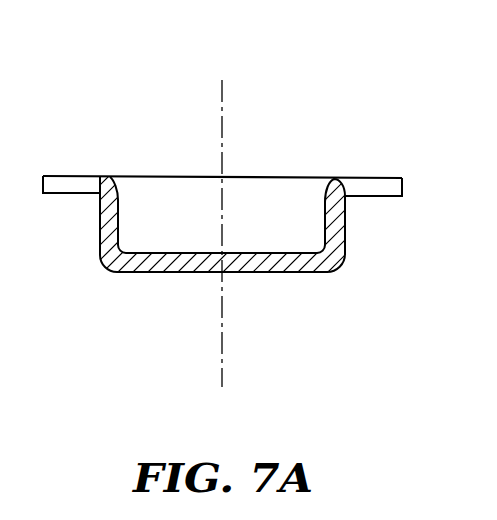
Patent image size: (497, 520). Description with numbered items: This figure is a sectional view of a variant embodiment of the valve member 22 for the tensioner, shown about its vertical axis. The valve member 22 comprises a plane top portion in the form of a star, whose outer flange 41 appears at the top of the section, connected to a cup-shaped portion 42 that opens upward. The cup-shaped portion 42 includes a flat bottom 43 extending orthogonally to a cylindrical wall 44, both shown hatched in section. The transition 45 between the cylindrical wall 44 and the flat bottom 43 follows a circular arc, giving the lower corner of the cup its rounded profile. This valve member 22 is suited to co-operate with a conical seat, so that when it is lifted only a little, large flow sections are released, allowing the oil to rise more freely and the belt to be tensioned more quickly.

The drawn cup 22 is at (283, 128).
The flange 41 is at (373, 179).
The cup-shaped portion 42 is at (205, 239).
The flat bottom 43 is at (250, 273).
The cylindrical wall 44 is at (122, 226).
The transition 45 is at (115, 266).